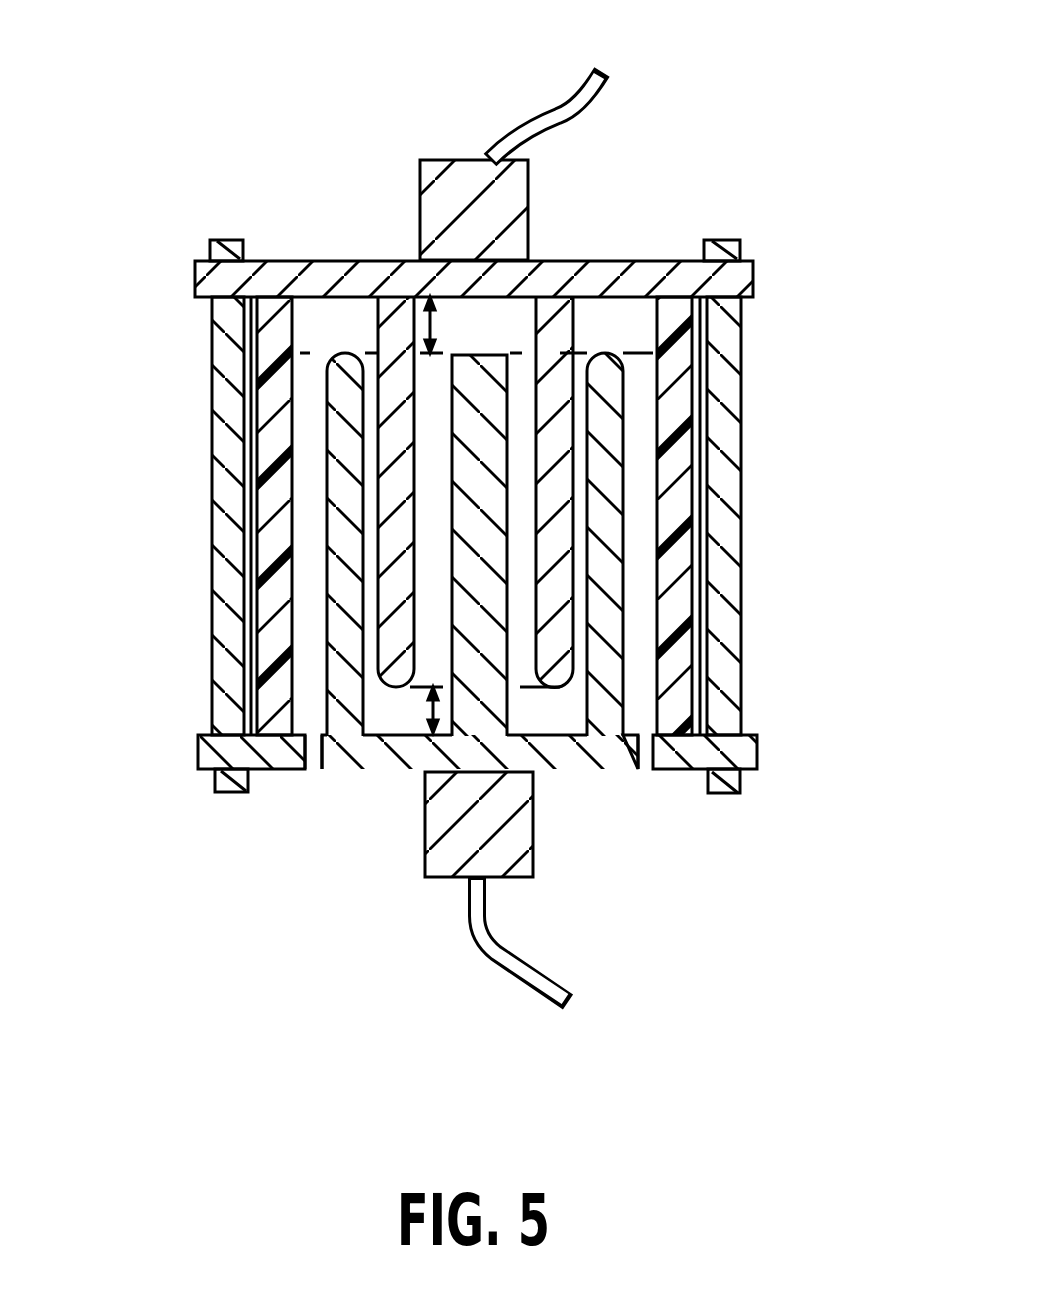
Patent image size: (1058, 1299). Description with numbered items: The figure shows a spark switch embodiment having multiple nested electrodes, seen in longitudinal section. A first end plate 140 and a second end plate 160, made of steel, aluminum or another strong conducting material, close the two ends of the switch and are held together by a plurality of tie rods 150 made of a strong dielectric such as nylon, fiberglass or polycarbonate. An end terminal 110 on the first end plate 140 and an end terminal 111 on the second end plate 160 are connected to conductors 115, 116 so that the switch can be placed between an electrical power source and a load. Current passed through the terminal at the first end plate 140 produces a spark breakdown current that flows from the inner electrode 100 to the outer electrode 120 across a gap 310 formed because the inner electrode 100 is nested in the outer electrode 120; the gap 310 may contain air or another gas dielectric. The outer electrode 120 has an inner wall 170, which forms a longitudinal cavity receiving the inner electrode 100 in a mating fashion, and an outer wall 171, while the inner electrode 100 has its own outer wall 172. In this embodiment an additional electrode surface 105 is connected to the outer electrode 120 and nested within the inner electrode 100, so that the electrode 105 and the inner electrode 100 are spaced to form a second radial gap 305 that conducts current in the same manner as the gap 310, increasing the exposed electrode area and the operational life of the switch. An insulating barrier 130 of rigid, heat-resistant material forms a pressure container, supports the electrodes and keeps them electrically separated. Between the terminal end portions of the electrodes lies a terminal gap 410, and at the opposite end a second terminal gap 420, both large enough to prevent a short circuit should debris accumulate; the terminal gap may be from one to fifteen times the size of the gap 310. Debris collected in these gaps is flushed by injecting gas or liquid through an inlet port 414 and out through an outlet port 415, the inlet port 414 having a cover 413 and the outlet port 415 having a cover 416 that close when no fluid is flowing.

The inner electrode 100 is at (557, 647).
The electrode surface 105 is at (460, 490).
The end terminal 110 is at (497, 210).
The end terminal 111 is at (407, 710).
The conductor 115 is at (591, 102).
The conductor 116 is at (525, 1000).
The outer electrode 120 is at (607, 500).
The insulating barrier 130 is at (273, 488).
The first end plate 140 is at (376, 297).
The tie rods 150 is at (212, 363).
The second end plate 160 is at (450, 750).
The inner wall 170 is at (412, 678).
The outer wall 171 is at (367, 727).
The outer wall 172 is at (305, 767).
The second radial gap 305 is at (522, 395).
The gap 310 is at (583, 462).
The terminal gap 410 is at (497, 850).
The cover 413 is at (643, 760).
The inlet port 414 is at (636, 785).
The outlet port 415 is at (313, 768).
The cover 416 is at (308, 768).
The second terminal gap 420 is at (323, 330).